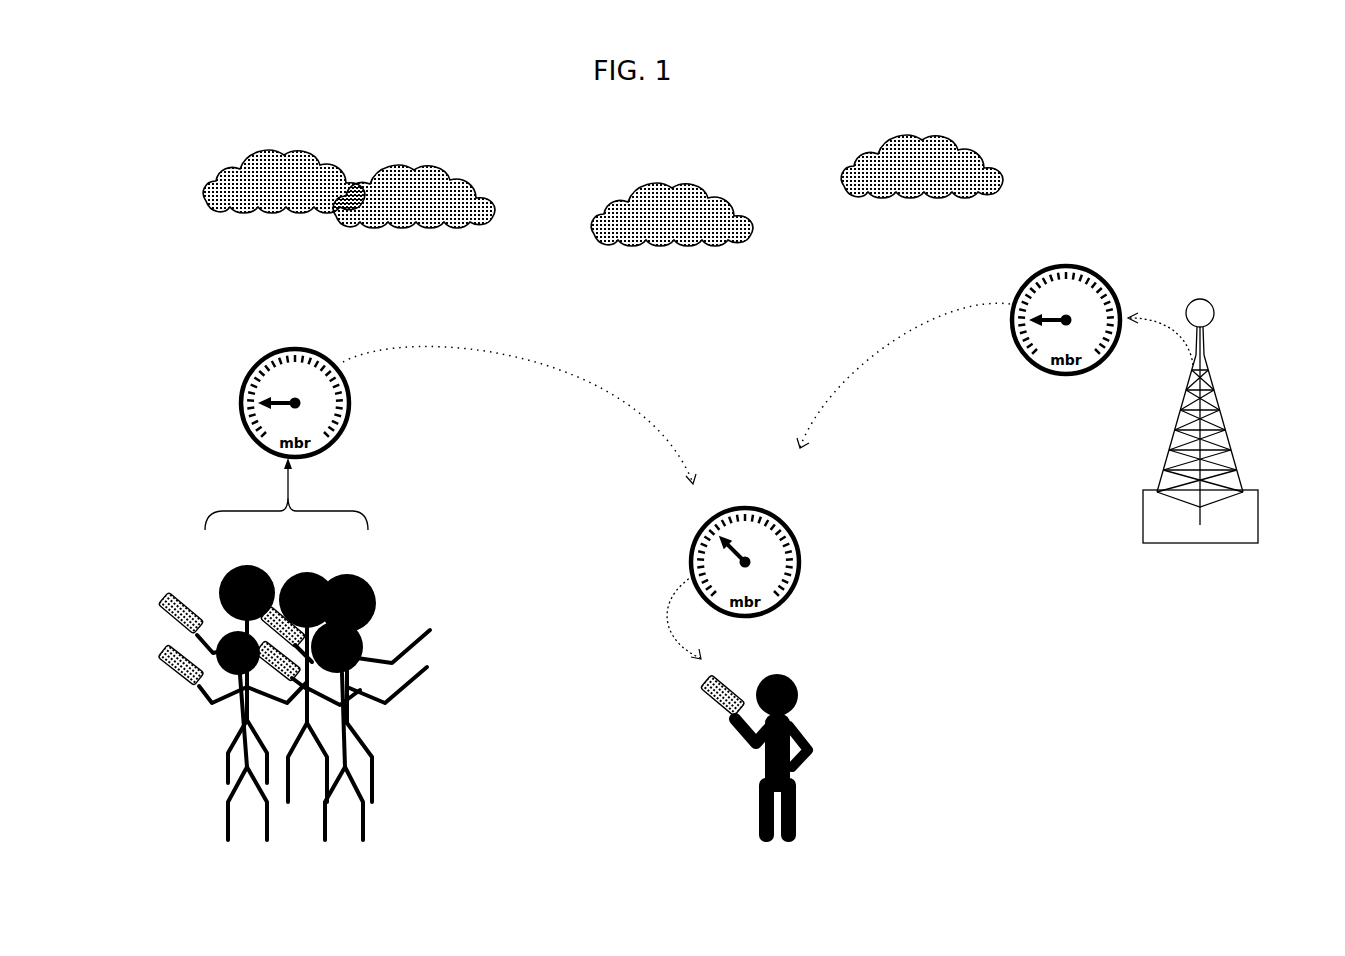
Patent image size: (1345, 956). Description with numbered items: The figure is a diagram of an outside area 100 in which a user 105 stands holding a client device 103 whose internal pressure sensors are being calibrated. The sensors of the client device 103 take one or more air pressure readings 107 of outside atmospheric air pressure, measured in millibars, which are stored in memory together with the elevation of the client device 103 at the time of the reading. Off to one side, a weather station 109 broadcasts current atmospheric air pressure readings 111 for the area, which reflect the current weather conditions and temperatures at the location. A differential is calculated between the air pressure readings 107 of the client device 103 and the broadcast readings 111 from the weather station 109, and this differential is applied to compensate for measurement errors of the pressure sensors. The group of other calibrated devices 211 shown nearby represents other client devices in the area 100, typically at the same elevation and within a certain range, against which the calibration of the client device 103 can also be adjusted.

The outside area 100 is at (1253, 62).
The client device 103 is at (713, 713).
The user 105 is at (803, 723).
The air pressure readings 107 is at (762, 512).
The weather station 109 is at (1143, 510).
The atmospheric air pressure readings 111 is at (1085, 268).
The other calibrated devices in the area 211 is at (380, 573).